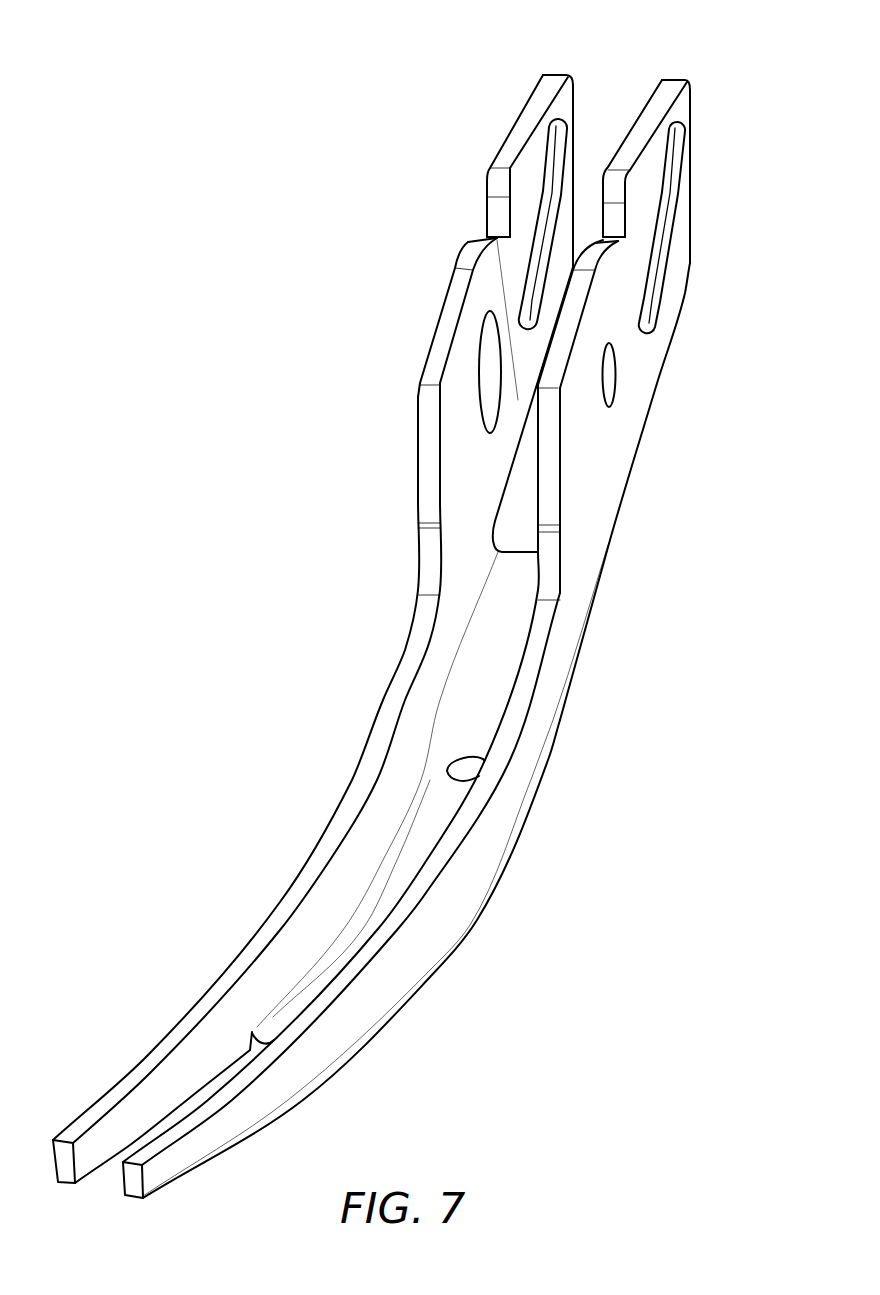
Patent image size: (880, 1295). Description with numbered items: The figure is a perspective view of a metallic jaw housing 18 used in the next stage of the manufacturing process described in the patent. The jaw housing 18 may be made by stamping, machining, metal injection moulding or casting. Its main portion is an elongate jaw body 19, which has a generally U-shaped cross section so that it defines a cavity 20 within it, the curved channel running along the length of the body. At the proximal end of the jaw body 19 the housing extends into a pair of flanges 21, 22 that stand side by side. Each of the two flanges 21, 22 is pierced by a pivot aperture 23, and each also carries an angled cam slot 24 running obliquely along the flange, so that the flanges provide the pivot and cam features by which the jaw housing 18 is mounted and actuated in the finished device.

The jaw housing 18 is at (398, 615).
The jaw body 19 is at (525, 816).
The cavity 20 is at (393, 855).
The flange 21 is at (668, 88).
The flange 22 is at (553, 88).
The pivot aperture 23 is at (492, 375).
The angled cam slot 24 is at (552, 193).